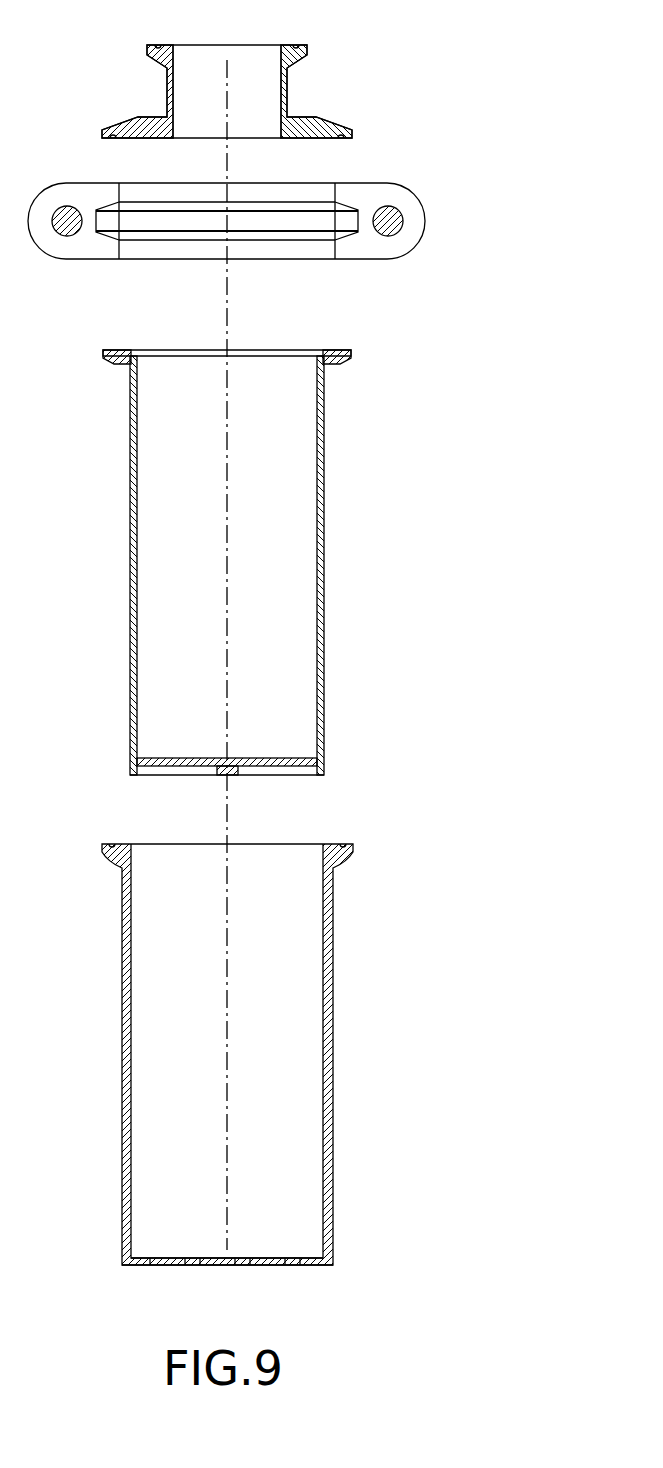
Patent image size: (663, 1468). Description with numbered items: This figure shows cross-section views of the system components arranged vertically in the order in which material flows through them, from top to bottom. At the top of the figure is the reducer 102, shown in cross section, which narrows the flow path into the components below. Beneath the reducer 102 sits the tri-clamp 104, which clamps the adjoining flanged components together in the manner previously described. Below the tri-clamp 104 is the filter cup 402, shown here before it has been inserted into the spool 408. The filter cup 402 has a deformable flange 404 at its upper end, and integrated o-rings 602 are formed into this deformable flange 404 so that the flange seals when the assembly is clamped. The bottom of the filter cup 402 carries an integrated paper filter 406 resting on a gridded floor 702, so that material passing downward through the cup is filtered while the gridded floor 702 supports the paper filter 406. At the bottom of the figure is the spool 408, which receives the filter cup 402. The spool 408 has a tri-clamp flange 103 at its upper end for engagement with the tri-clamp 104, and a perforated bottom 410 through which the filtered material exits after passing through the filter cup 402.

The reducer 102 is at (279, 436).
The tri-clamp flange 103 is at (307, 47).
The tri-clamp 104 is at (418, 220).
The filter cup 402 is at (280, 557).
The deformable flange 404 is at (259, 382).
The integrated paper filter 406 is at (310, 757).
The spool 408 is at (267, 1058).
The perforated bottom 410 is at (333, 1258).
The integrated o-rings 602 is at (112, 362).
The gridded floor 702 is at (314, 758).